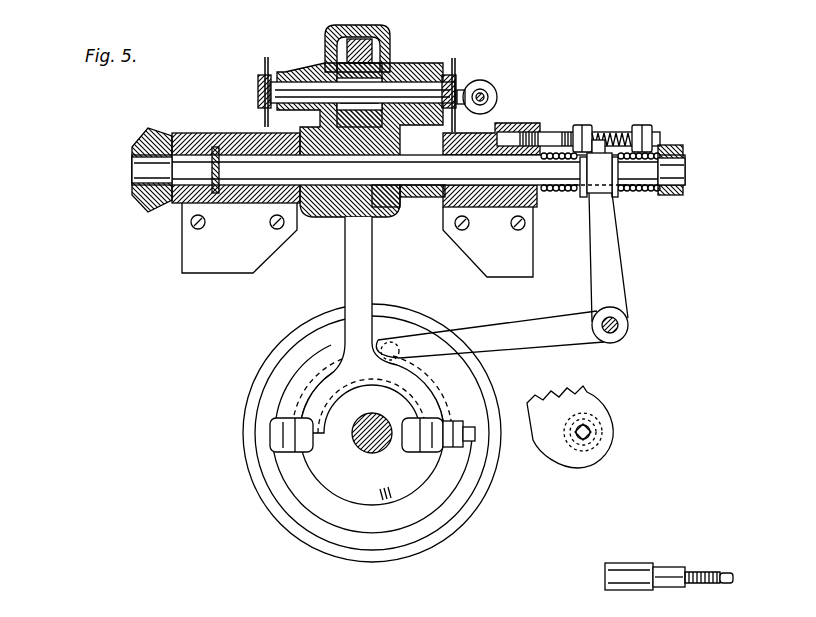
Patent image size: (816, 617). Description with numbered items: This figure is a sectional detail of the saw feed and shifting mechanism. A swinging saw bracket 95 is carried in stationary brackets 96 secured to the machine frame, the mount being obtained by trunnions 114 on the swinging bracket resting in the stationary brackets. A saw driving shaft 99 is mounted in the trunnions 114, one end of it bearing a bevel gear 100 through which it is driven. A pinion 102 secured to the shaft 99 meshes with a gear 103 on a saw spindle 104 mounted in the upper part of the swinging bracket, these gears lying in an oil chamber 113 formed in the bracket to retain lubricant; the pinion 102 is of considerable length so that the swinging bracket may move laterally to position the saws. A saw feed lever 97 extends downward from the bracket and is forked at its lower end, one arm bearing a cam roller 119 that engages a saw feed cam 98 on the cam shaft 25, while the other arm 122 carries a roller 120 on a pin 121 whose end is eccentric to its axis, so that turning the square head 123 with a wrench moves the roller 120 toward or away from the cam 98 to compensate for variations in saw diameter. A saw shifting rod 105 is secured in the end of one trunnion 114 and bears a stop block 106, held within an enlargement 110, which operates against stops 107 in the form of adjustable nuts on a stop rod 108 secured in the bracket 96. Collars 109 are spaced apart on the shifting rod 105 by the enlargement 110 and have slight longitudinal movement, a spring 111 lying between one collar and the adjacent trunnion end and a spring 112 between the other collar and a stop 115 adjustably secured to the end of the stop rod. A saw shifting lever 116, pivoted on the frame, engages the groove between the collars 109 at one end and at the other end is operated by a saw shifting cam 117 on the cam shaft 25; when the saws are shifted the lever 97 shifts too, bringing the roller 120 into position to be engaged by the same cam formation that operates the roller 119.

The cam shaft 25 is at (371, 454).
The swinging saw bracket 95 is at (323, 217).
The brackets 96 is at (203, 263).
The saw feed lever 97 is at (352, 260).
The saw feed cam 98 is at (327, 482).
The saw driving shaft 99 is at (250, 180).
The bevel gear 100 is at (137, 202).
The pinion 102 is at (392, 210).
The gear 103 is at (372, 43).
The saw spindle 104 is at (405, 90).
The saw shifting rod 105 is at (680, 168).
The stop block 106 is at (600, 140).
The stops 107 is at (583, 125).
The stop rod 108 is at (552, 132).
The collars 109 is at (582, 198).
The enlargement 110 is at (628, 132).
The spring 111 is at (562, 190).
The spring 112 is at (620, 190).
The oil chamber 113 is at (327, 28).
The trunnions 114 is at (240, 148).
The stop 115 is at (677, 147).
The saw shifting lever 116 is at (612, 248).
The saw shifting cam 117 is at (483, 490).
The cam roller 119 is at (300, 455).
The roller 120 is at (412, 452).
The pin 121 is at (460, 448).
The arm 122 is at (433, 398).
The square head 123 is at (472, 437).